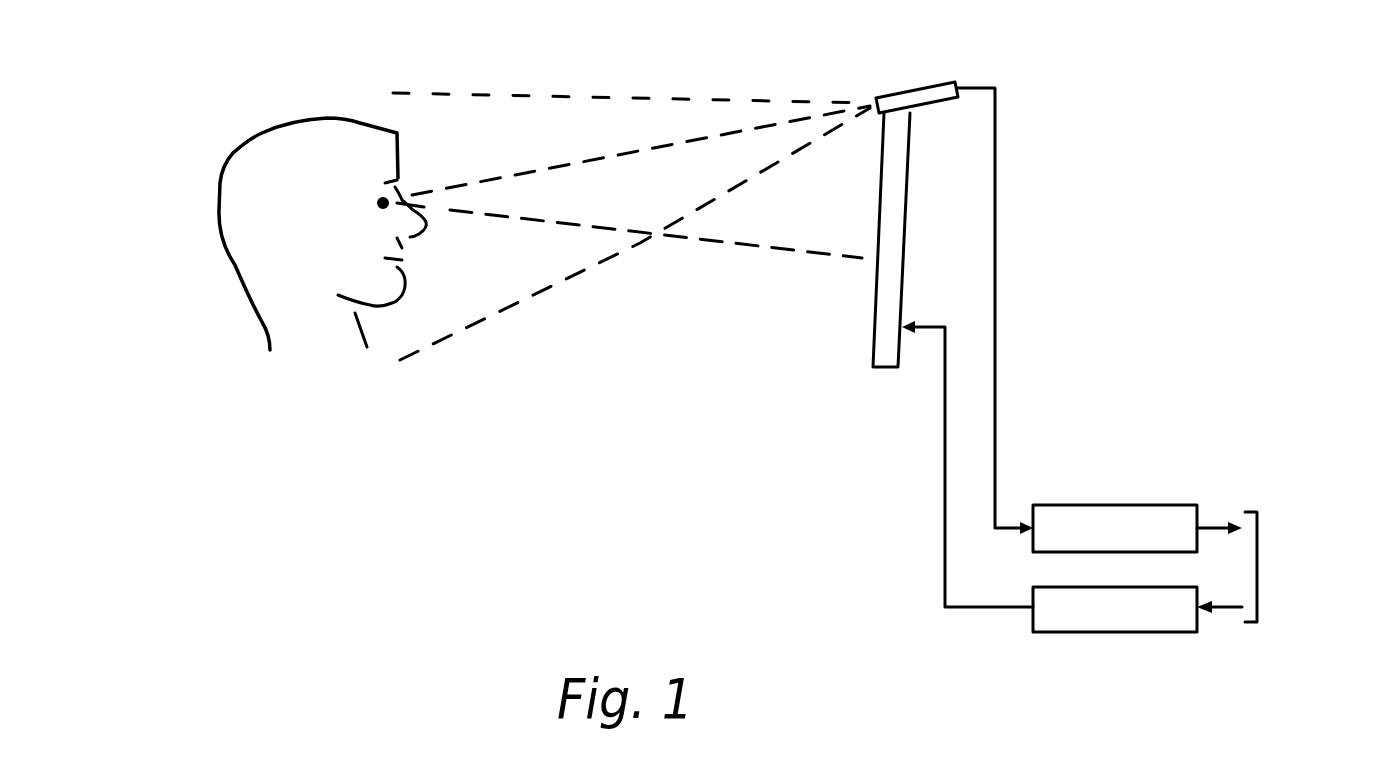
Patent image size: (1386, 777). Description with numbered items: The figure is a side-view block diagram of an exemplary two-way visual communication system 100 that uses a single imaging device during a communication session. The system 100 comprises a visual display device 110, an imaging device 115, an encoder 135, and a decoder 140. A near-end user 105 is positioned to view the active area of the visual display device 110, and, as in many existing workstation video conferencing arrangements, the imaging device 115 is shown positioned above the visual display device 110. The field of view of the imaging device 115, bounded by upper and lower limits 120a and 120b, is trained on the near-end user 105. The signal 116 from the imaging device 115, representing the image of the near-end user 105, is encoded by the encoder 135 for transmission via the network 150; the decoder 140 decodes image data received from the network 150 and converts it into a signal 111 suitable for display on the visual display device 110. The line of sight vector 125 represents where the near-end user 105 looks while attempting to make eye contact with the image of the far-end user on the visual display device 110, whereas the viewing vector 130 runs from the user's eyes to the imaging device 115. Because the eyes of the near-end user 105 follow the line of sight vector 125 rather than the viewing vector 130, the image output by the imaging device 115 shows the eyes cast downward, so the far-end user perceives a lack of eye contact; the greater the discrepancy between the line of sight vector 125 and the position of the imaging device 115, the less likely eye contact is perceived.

The two-way visual communication system 100 is at (1105, 150).
The near-end user 105 is at (213, 183).
The visual display device 110 is at (863, 352).
The signal 111 is at (935, 512).
The imaging device 115 is at (888, 83).
The signal 116 is at (1008, 247).
The upper limit of field of view 120a is at (537, 97).
The lower limit of field of view 120b is at (588, 282).
The line of sight vector 125 is at (738, 250).
The viewing vector 130 is at (603, 145).
The encoder 135 is at (1115, 528).
The decoder 140 is at (1115, 609).
The network 150 is at (1286, 567).